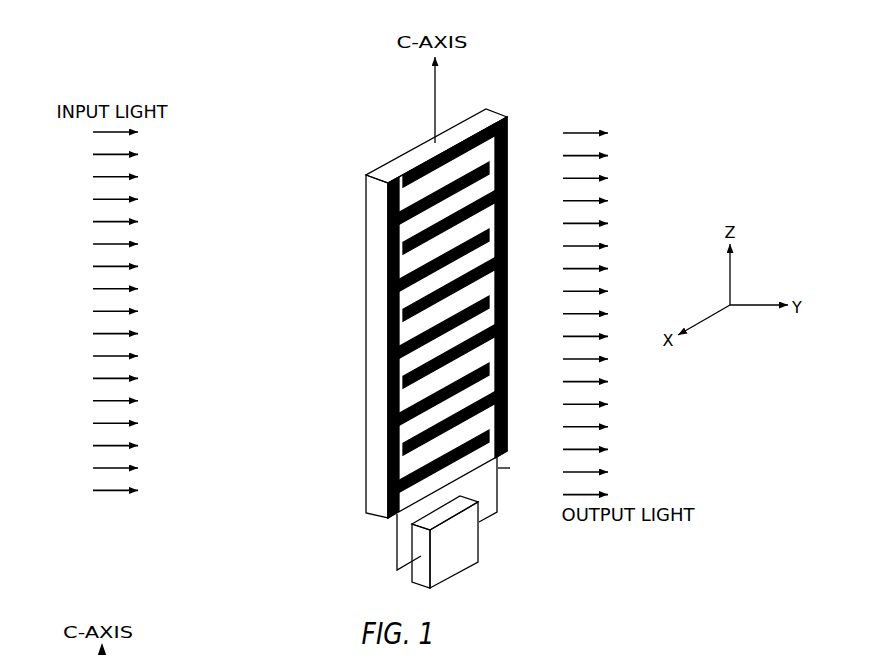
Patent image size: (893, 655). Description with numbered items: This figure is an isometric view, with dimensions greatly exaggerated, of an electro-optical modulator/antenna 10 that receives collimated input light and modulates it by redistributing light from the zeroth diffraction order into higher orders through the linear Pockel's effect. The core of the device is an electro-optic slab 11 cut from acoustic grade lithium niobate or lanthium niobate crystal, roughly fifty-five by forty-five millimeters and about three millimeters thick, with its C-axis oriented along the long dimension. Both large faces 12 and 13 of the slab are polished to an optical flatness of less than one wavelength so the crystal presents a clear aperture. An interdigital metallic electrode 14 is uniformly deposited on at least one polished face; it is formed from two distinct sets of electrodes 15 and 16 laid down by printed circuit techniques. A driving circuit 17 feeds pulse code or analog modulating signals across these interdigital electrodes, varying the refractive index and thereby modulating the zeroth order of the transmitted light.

The electro-optical modulator/antenna 10 is at (499, 66).
The electro-optic slab 11 is at (389, 172).
The polished face 12 is at (366, 217).
The polished face 13 is at (455, 167).
The interdigital metallic electrode 14 is at (509, 260).
The first set of electrodes 15 is at (465, 320).
The second set of electrodes 16 is at (483, 138).
The driving circuit 17 is at (441, 557).